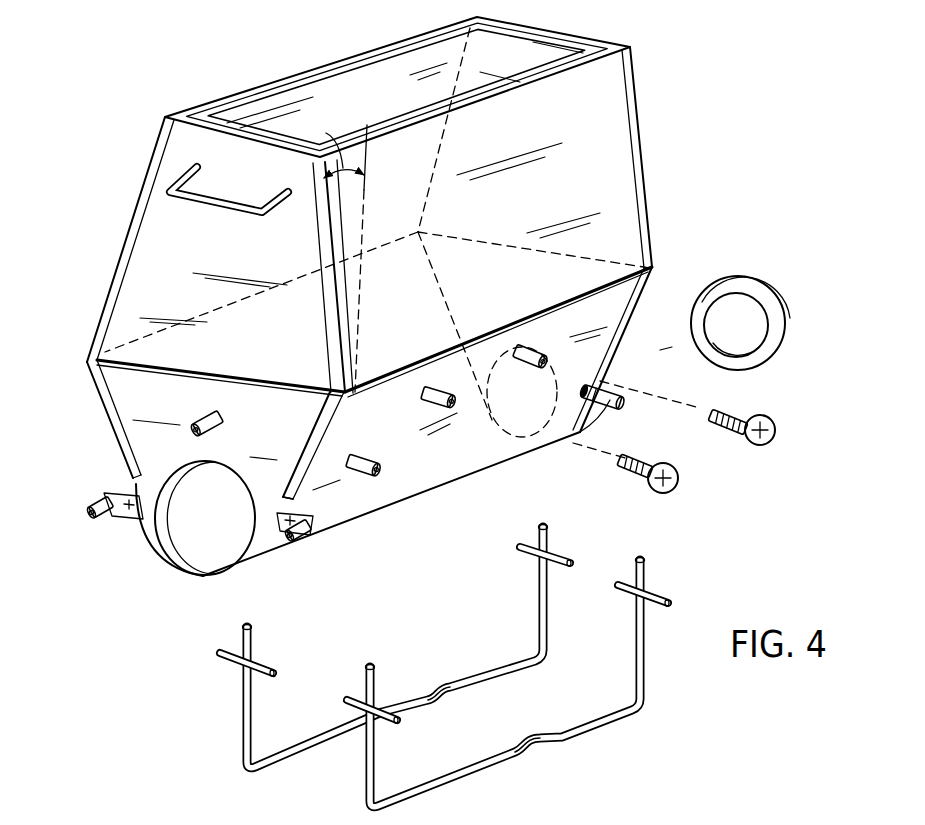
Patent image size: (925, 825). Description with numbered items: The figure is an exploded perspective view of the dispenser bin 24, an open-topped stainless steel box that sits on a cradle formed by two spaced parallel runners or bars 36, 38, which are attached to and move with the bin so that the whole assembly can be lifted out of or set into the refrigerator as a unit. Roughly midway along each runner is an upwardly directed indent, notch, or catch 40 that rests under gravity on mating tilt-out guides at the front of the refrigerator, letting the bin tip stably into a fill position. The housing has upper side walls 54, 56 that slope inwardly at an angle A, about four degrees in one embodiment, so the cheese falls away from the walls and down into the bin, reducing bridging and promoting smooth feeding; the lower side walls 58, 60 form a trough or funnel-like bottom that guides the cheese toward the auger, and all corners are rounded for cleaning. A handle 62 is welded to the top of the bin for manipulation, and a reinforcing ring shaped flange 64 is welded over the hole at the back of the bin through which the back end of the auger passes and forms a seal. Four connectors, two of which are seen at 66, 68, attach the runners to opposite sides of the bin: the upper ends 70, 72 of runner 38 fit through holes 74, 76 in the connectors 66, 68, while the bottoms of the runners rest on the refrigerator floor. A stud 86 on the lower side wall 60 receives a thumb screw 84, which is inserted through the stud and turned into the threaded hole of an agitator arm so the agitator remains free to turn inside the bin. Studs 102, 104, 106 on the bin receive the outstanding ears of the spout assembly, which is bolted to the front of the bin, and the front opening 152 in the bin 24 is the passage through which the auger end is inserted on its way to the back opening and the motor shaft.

The bin 24 is at (672, 102).
The runner 36 is at (498, 667).
The runner 38 is at (603, 718).
The catch 40 is at (432, 690).
The upper side wall 54 is at (386, 110).
The upper side wall 56 is at (490, 290).
The lower side wall 58 is at (100, 432).
The lower side wall 60 is at (448, 468).
The handle 62 is at (228, 208).
The reinforcing ring shaped flange 64 is at (790, 312).
The connector 66 is at (366, 460).
The connector 68 is at (615, 405).
The upper end of runner 70 is at (382, 680).
The upper end of runner 72 is at (645, 572).
The hole 74 is at (372, 508).
The hole 76 is at (600, 395).
The thumb screw 84 is at (777, 427).
The stud 86 is at (440, 388).
The stud 102 is at (113, 522).
The stud 104 is at (224, 420).
The stud 106 is at (305, 528).
The front opening 152 is at (255, 520).